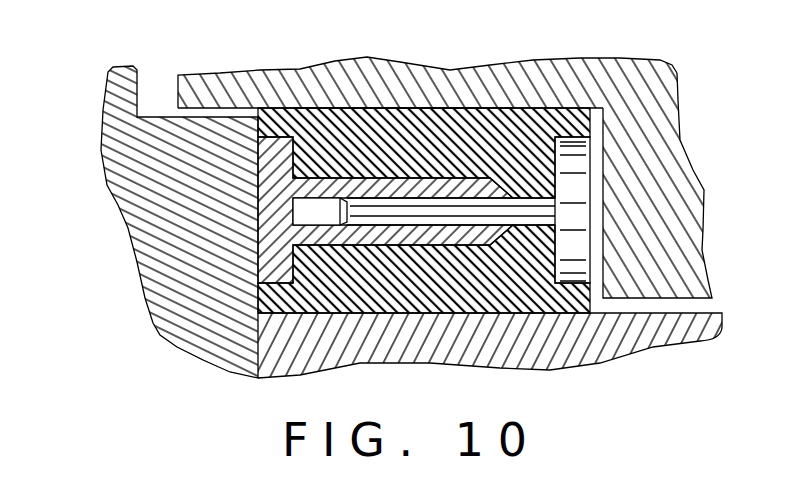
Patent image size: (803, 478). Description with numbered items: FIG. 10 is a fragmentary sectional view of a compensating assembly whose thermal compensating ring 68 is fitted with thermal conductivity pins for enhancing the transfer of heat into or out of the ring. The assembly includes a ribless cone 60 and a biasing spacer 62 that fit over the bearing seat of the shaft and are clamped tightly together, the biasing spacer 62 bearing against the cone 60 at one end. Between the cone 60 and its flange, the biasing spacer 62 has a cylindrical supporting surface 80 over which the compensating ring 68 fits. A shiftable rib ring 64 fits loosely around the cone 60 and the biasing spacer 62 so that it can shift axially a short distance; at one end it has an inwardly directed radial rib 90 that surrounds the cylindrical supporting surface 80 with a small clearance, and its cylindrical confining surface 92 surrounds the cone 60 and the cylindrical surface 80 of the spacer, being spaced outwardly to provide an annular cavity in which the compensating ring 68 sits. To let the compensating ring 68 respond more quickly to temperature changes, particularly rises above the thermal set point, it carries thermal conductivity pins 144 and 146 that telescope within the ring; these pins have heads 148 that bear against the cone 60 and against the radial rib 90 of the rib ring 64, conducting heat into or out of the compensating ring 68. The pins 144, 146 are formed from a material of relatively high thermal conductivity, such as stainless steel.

The ribless cone 60 is at (157, 298).
The biasing spacer 62 is at (573, 355).
The shiftable rib ring 64 is at (627, 80).
The thermal compensating ring 68 is at (458, 108).
The cylindrical supporting surface 80 is at (364, 302).
The radial rib 90 is at (670, 223).
The cylindrical confining surface 92 is at (404, 118).
The thermal conductivity pin 144 is at (334, 190).
The thermal conductivity pin 146 is at (513, 205).
The head 148 is at (268, 213).